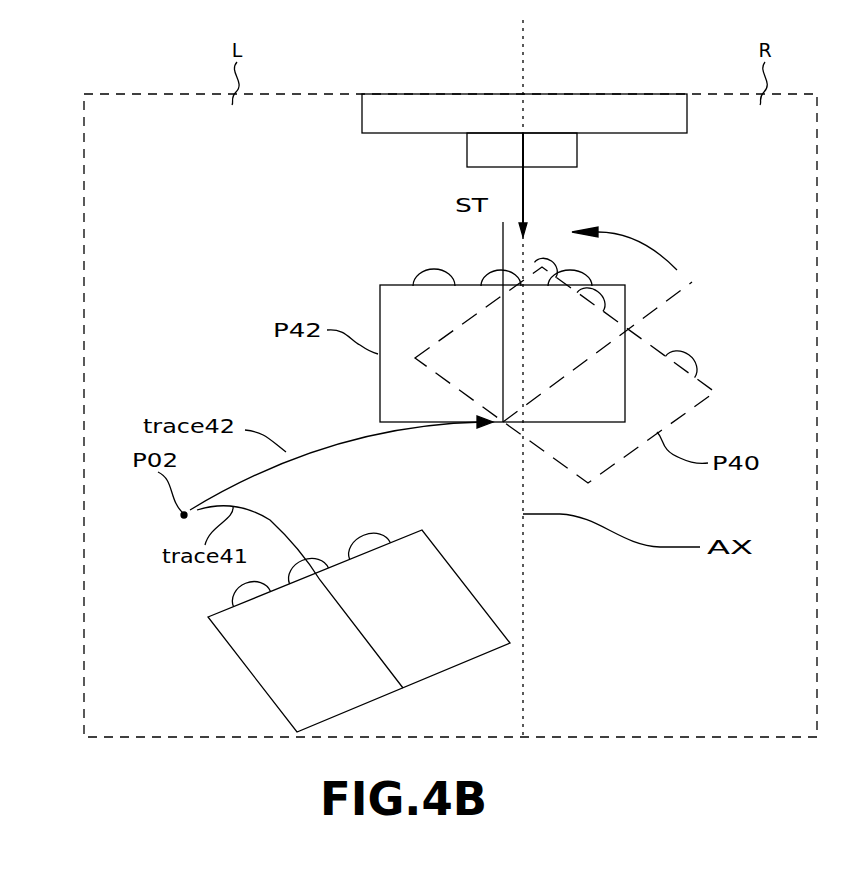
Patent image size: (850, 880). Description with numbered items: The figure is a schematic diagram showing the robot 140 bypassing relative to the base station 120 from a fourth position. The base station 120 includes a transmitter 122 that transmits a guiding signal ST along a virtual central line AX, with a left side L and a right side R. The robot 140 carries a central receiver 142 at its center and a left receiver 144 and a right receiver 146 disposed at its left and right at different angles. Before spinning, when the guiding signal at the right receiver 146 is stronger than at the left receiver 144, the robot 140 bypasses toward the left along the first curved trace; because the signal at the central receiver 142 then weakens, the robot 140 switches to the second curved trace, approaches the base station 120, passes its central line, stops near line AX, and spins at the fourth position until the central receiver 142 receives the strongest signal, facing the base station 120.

The base station 120 is at (550, 84).
The transmitter 122 is at (577, 148).
The robot 140 is at (240, 704).
The central receiver 142 is at (309, 553).
The left receiver 144 is at (228, 591).
The right receiver 146 is at (366, 532).